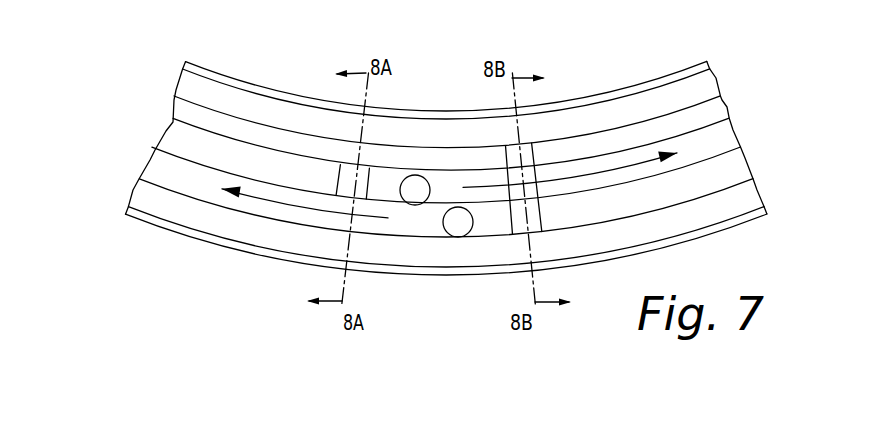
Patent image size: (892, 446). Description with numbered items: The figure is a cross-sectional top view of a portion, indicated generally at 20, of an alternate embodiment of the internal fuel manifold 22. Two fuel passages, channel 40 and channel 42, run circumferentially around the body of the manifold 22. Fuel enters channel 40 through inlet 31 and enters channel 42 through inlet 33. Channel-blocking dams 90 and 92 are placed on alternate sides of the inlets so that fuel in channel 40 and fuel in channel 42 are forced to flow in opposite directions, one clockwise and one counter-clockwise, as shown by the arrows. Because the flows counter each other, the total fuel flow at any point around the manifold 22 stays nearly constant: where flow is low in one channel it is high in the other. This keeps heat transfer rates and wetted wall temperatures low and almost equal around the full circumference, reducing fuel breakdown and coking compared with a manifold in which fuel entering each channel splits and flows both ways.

The band 20 is at (453, 173).
The manifold 22 is at (235, 250).
The inlet 31 is at (415, 206).
The inlet 33 is at (462, 238).
The channel 40 is at (715, 137).
The channel 42 is at (186, 181).
The channel-blocking dam 90 is at (365, 167).
The channel-blocking dam 92 is at (510, 142).